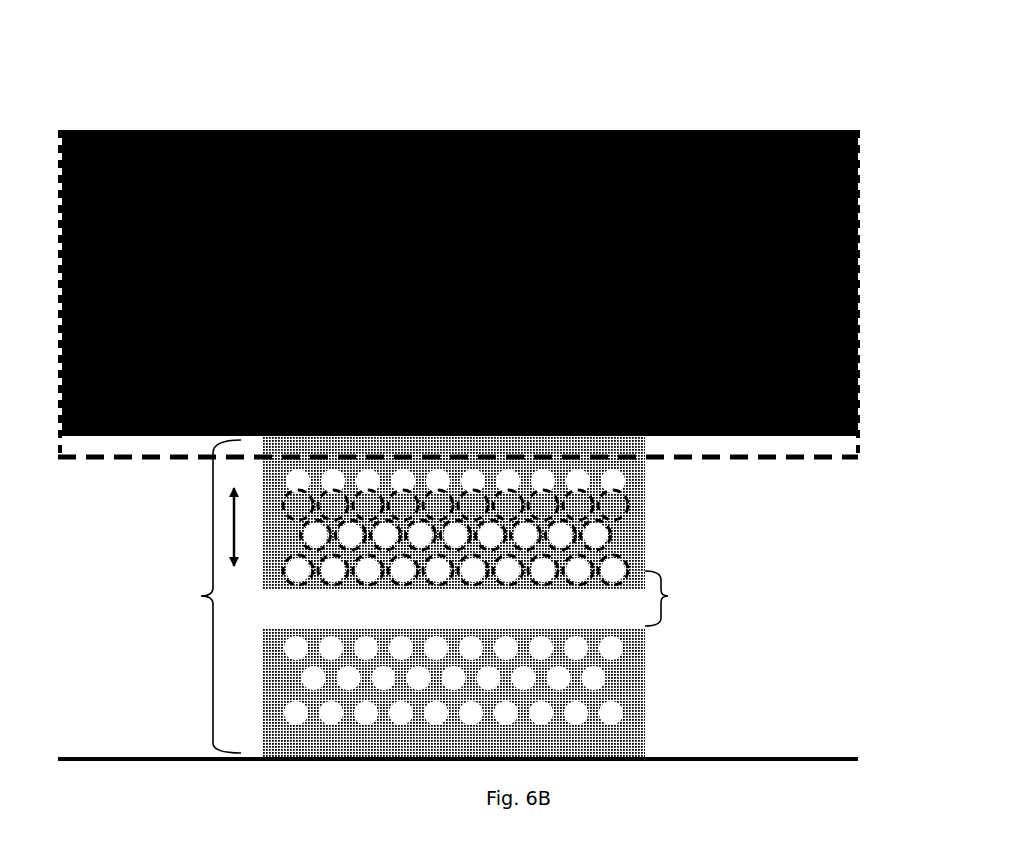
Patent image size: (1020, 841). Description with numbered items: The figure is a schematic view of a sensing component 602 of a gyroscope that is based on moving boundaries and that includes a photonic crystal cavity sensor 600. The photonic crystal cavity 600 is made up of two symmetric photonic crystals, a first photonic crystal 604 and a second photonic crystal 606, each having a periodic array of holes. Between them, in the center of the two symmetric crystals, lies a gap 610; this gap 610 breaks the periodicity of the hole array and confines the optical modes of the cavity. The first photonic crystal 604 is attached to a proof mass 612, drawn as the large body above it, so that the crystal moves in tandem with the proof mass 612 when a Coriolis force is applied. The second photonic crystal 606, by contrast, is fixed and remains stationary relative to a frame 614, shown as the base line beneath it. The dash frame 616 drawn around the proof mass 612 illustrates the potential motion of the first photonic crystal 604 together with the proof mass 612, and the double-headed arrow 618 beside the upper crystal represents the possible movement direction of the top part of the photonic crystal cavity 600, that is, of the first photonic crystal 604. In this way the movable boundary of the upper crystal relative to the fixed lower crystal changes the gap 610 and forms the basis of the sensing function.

The photonic crystal cavity sensor 600 is at (417, 597).
The sensing component 602 is at (850, 99).
The first photonic crystal 604 is at (628, 505).
The second photonic crystal 606 is at (630, 657).
The gap 610 is at (662, 588).
The proof mass 612 is at (852, 242).
The frame 614 is at (780, 748).
The dash frame 616 is at (837, 452).
The arrow 618 is at (224, 520).